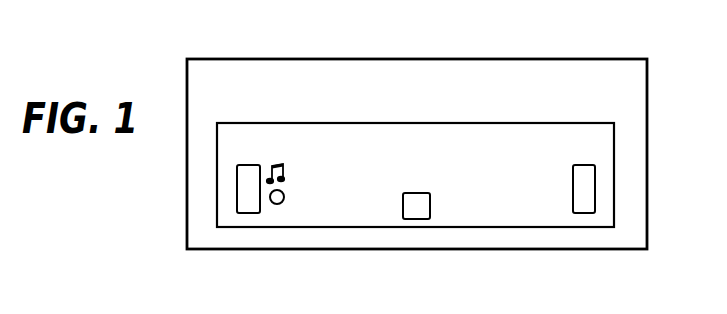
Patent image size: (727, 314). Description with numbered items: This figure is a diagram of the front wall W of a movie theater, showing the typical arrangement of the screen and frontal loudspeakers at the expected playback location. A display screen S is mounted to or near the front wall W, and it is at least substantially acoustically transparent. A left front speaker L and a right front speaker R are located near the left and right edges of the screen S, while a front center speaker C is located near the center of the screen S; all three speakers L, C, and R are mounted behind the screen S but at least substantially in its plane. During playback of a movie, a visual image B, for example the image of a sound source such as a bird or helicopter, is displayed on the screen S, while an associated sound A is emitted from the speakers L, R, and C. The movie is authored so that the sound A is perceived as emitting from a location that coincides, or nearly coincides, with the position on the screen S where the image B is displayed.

The front wall W is at (622, 106).
The display screen S is at (515, 123).
The left front speaker L is at (245, 178).
The right front speaker R is at (587, 200).
The front center speaker C is at (430, 205).
The visual image B is at (285, 196).
The sound A is at (284, 167).